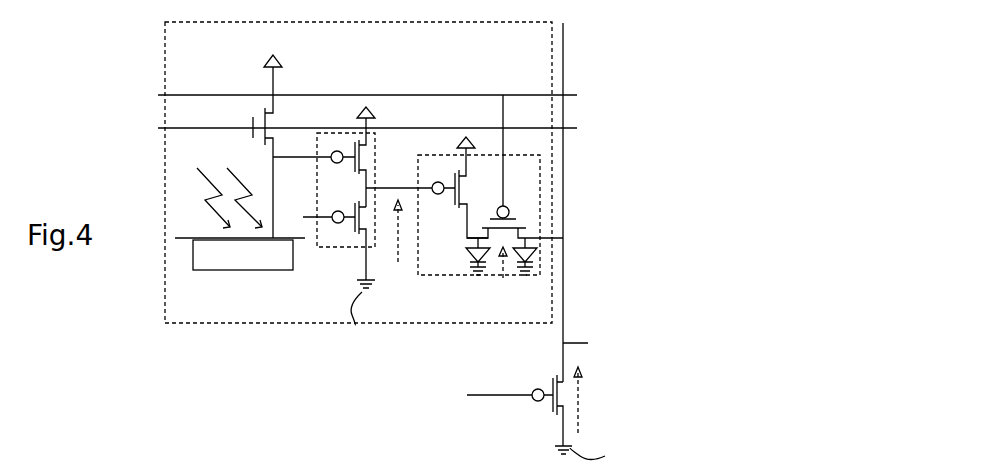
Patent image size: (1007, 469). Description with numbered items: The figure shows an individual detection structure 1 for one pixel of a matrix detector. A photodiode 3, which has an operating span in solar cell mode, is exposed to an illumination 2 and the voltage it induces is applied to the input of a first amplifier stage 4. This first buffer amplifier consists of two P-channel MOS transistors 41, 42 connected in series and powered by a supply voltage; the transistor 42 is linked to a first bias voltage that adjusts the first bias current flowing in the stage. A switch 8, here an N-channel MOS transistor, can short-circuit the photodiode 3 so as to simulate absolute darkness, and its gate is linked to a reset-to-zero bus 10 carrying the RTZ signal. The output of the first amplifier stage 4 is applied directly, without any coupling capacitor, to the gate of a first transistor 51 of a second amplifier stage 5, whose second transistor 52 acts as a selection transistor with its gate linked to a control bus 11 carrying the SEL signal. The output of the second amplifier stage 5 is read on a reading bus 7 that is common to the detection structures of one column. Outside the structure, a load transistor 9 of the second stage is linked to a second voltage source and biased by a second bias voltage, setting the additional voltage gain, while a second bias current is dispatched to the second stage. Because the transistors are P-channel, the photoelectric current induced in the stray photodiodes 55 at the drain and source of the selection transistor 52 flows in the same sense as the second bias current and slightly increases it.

The individual detection structure 1 is at (553, 43).
The illumination 2 is at (200, 183).
The photodiode 3 is at (207, 272).
The first amplifier stage 4 is at (360, 209).
The second amplifier stage 5 is at (540, 155).
The reading bus 7 is at (563, 180).
The switch 8 is at (276, 81).
The load transistor 9 is at (553, 406).
The reset-to-zero bus 10 is at (163, 127).
The control bus SEL 11 is at (163, 94).
The P-channel MOS transistor 41 is at (365, 157).
The P-channel MOS transistor 42 is at (327, 248).
The first field-effect transistor 51 is at (466, 178).
The selection transistor 52 is at (528, 212).
The stray photodiodes 55 is at (478, 258).